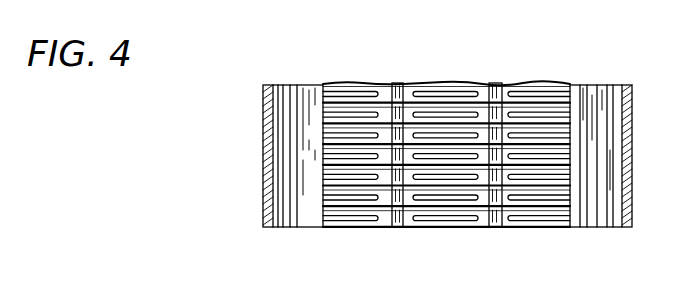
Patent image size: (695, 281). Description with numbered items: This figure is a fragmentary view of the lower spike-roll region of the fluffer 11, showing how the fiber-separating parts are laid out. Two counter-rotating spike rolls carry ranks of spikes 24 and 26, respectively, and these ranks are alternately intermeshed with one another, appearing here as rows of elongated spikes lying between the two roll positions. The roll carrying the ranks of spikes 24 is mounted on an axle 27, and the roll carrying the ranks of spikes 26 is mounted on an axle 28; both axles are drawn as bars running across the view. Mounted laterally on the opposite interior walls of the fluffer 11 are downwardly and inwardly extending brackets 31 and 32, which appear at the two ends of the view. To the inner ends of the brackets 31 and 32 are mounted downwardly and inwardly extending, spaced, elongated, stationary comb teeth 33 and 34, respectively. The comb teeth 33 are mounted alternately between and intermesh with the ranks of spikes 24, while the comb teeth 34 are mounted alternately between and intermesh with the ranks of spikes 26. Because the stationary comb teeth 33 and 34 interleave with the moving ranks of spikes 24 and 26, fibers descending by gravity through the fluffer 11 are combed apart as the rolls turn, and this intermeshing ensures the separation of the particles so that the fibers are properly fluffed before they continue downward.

The fluffer 11 is at (260, 171).
The ranks of spikes 24 is at (435, 100).
The ranks of spikes 26 is at (465, 89).
The axle 27 is at (398, 228).
The axle 28 is at (497, 228).
The bracket 31 is at (283, 92).
The bracket 32 is at (602, 97).
The stationary comb teeth 33 is at (362, 90).
The stationary comb teeth 34 is at (547, 100).